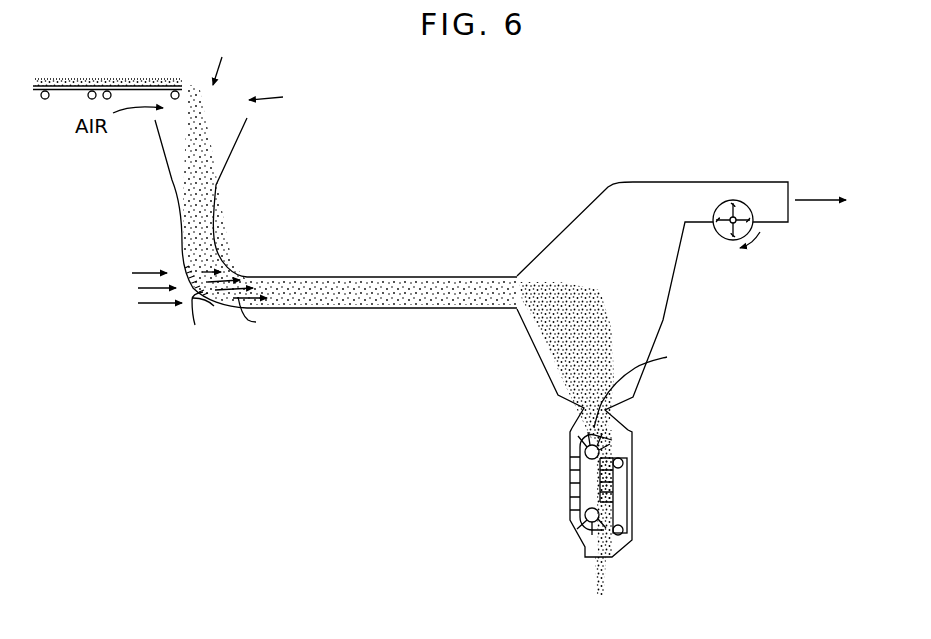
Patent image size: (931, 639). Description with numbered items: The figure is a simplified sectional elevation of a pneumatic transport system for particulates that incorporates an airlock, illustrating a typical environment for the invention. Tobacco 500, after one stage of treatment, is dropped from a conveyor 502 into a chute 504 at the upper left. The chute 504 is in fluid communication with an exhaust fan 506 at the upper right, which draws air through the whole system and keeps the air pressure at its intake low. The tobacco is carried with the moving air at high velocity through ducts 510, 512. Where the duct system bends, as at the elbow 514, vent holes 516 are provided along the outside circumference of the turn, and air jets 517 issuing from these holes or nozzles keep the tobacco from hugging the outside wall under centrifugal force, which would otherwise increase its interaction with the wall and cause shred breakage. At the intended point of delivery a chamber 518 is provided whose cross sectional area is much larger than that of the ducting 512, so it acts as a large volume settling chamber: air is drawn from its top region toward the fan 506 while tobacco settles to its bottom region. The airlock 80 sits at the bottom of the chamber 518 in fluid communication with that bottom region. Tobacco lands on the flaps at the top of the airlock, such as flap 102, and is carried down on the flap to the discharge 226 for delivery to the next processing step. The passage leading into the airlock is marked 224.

The tobacco 500 is at (125, 85).
The conveyor 502 is at (92, 90).
The chute 504 is at (215, 128).
The exhaust fan 506 is at (745, 200).
The duct 510 is at (182, 243).
The duct 512 is at (390, 292).
The elbow 514 is at (217, 283).
The vent holes 516 is at (173, 314).
The air jets 517 is at (261, 317).
The chamber 518 is at (643, 282).
The airlock 80 is at (676, 482).
The flap 102 is at (630, 439).
The nozzle inlet passage 224 is at (650, 383).
The discharge 226 is at (605, 553).